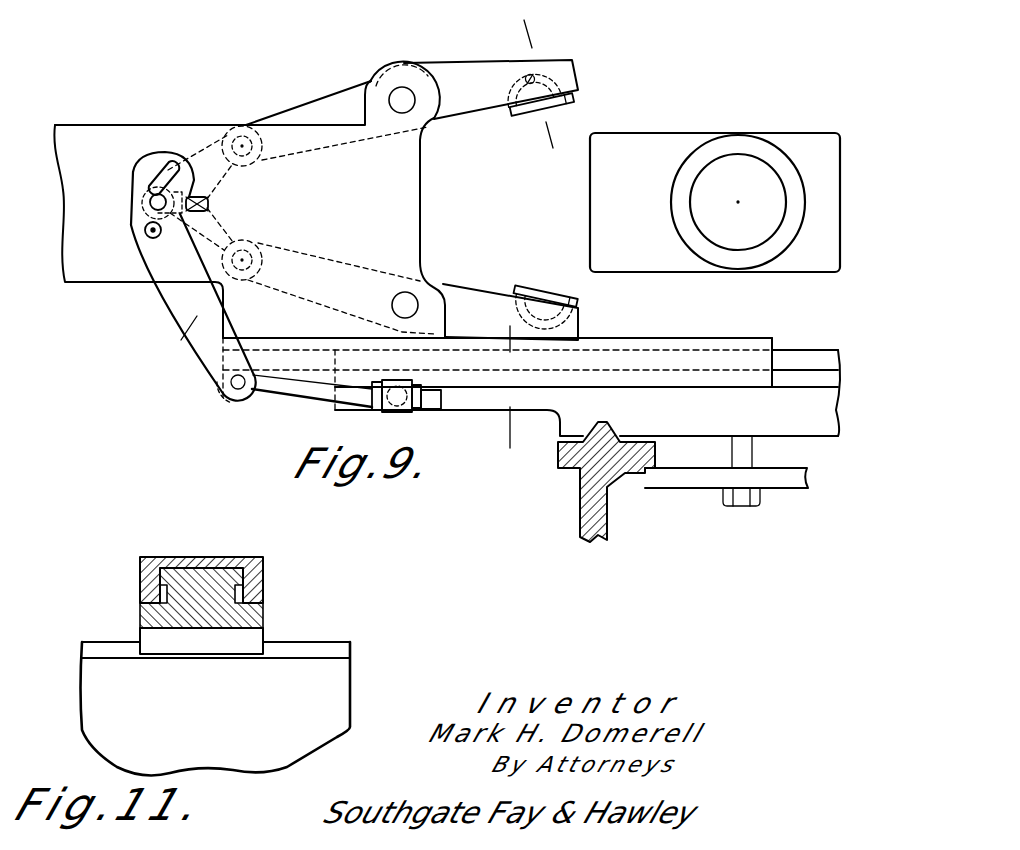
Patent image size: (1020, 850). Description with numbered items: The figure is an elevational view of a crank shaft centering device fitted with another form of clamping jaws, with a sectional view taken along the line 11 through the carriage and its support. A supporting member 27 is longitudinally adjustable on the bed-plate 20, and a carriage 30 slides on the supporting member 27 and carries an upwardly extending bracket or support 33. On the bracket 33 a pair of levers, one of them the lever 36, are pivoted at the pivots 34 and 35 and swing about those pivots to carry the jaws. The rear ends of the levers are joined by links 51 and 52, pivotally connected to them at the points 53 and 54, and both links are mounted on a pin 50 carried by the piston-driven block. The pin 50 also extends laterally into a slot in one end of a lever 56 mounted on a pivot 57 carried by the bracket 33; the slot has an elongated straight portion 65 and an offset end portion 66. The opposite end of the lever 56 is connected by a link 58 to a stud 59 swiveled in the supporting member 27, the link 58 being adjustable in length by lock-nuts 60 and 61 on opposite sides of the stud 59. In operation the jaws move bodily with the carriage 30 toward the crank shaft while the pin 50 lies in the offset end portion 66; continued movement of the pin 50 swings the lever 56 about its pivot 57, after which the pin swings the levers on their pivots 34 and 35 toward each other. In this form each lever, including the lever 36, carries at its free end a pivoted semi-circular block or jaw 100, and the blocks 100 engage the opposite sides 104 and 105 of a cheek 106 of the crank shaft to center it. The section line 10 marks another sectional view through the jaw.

In FIG. 9, the section line 10- 10 is at (521, 161).
In FIG. 9, the section line 11— 11 is at (487, 326).
In FIG. 9, the bed-plate 20 is at (581, 501).
In FIG. 11, the bed-plate 20 is at (308, 690).
In FIG. 9, the supporting member 27 is at (735, 408).
In FIG. 11, the supporting member 27 is at (252, 618).
In FIG. 9, the carriage 30 is at (697, 338).
In FIG. 11, the carriage 30 is at (240, 558).
In FIG. 9, the bracket or support 33 is at (349, 190).
In FIG. 9, the pivot 34 is at (402, 100).
In FIG. 9, the pivot 35 is at (407, 304).
In FIG. 9, the lever 36 is at (454, 70).
In FIG. 9, the pin 50 is at (150, 203).
In FIG. 9, the link 51 is at (206, 146).
In FIG. 9, the link 52 is at (237, 230).
In FIG. 9, the pivotal connection 53 is at (245, 128).
In FIG. 9, the pivotal connection 54 is at (242, 272).
In FIG. 9, the lever 56 is at (193, 323).
In FIG. 9, the pivot 57 is at (150, 238).
In FIG. 9, the link 58 is at (285, 392).
In FIG. 9, the stud 59 is at (403, 415).
In FIG. 9, the lock-nut 60 is at (441, 398).
In FIG. 9, the lock-nut 61 is at (372, 410).
In FIG. 9, the elongated straight portion 65 is at (165, 172).
In FIG. 9, the offset end portion 66 is at (146, 231).
In FIG. 9, the semi-circular block or jaw 100 is at (576, 101).
In FIG. 9, the side of cheek 104 is at (702, 131).
In FIG. 9, the side of cheek 105 is at (652, 299).
In FIG. 9, the cheek 106 is at (645, 147).